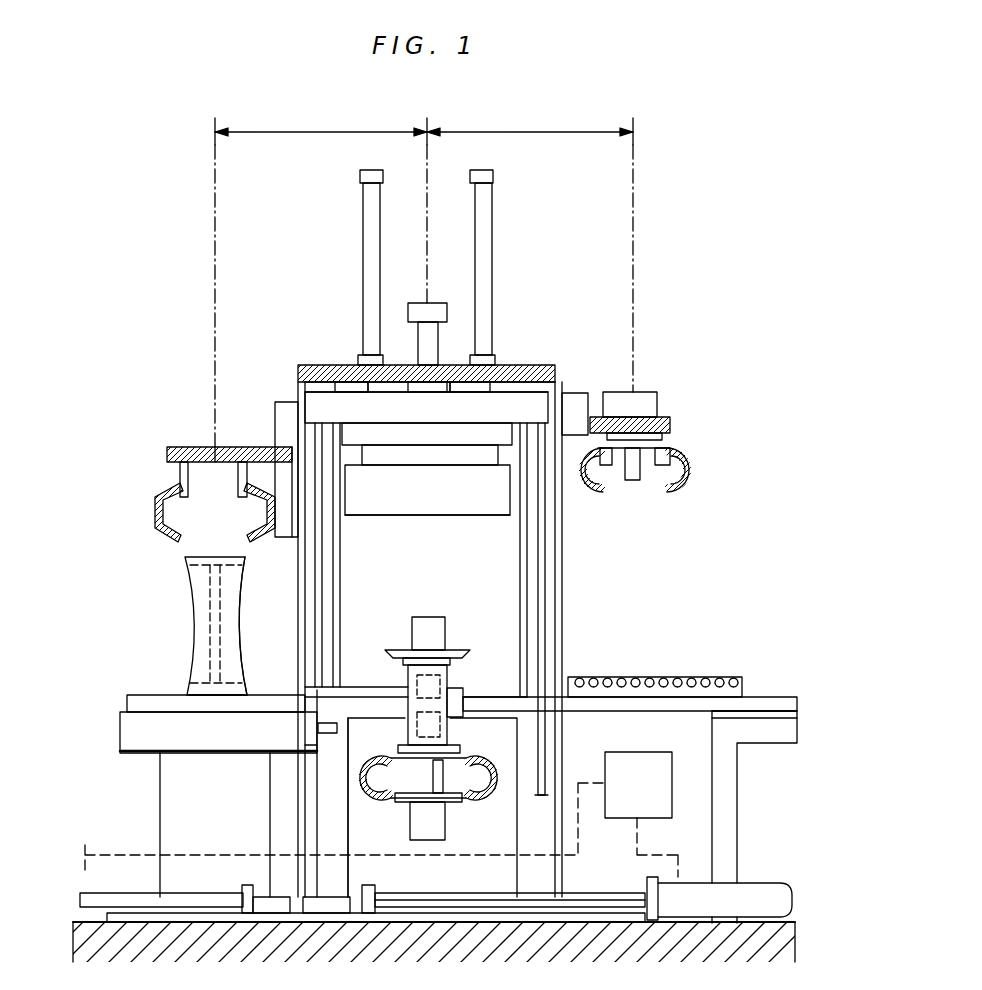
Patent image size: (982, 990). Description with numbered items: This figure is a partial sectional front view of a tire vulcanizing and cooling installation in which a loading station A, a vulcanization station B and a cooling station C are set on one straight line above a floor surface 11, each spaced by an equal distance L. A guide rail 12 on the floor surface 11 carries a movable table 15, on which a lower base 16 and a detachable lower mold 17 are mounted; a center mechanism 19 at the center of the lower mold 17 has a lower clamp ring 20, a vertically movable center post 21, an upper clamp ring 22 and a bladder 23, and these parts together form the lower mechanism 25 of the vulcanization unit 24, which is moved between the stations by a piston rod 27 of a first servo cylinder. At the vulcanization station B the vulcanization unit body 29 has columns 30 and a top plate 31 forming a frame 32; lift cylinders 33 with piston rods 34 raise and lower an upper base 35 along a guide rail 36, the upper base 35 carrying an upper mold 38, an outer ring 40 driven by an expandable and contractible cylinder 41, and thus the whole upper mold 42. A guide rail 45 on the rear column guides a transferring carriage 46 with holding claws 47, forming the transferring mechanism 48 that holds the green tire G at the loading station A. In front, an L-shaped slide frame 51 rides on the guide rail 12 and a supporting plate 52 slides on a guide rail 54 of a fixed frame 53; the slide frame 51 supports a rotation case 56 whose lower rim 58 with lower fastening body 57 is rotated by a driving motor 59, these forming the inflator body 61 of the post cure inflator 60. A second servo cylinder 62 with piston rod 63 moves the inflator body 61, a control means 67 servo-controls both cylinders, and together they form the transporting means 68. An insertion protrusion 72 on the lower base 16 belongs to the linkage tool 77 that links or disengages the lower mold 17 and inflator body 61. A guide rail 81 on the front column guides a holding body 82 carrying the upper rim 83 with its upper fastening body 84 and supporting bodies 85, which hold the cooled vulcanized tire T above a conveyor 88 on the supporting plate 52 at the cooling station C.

The floor surface 11 is at (580, 925).
The guide rail 12 is at (400, 925).
The movable table 15 is at (160, 799).
The lower base 16 is at (125, 726).
The lower mold 17 is at (165, 695).
The center mechanism 19 is at (190, 606).
The lower clamp ring 20 is at (245, 684).
The center post 21 is at (215, 630).
The upper clamp ring 22 is at (185, 561).
The bladder 23 is at (238, 621).
The vulcanization unit 24 is at (522, 360).
The lower mechanism 25 is at (120, 680).
The piston rod 27 is at (150, 893).
The vulcanization unit body 29 is at (562, 385).
The column 30 is at (335, 530).
The top plate 31 is at (312, 364).
The frame 32 is at (547, 640).
The lift cylinder 33 is at (368, 222).
The piston rod 34 is at (378, 390).
The upper base 35 is at (298, 395).
The guide rail 36 is at (320, 586).
The upper mold 38 is at (418, 466).
The outer ring 40 is at (428, 510).
The expandable and contractible cylinder 41 is at (436, 303).
The upper mold 42 is at (468, 517).
The guide rail 45 is at (276, 537).
The transferring carriage 46 is at (200, 447).
The holding claw 47 is at (240, 487).
The transferring mechanism 48 is at (212, 425).
The slide frame 51 is at (317, 797).
The supporting plate 52 is at (750, 700).
The fixed frame 53 is at (737, 802).
The guide rail 54 is at (780, 712).
The rotation case 56 is at (458, 690).
The lower fastening body 57 is at (428, 617).
The lower rim 58 is at (392, 652).
The driving motor 59 is at (412, 686).
The post cure inflator 60 is at (495, 700).
The inflator body 61 is at (478, 800).
The second servo cylinder 62 is at (760, 884).
The piston rod 63 is at (440, 894).
The control means 67 is at (672, 781).
The transporting means 68 is at (760, 852).
The insertion protrusion 72 is at (318, 729).
The linkage tool 77 is at (300, 747).
The guide rail 81 is at (564, 551).
The holding body 82 is at (670, 426).
The upper rim 83 is at (438, 803).
The upper fastening body 84 is at (606, 466).
The supporting body 85 is at (668, 464).
The conveyor 88 is at (660, 677).
The loading station A is at (225, 212).
The vulcanization station B is at (433, 205).
The cooling station C is at (640, 200).
The green tire G is at (155, 510).
The vulcanized tire T is at (370, 796).
The equal distance L is at (424, 125).